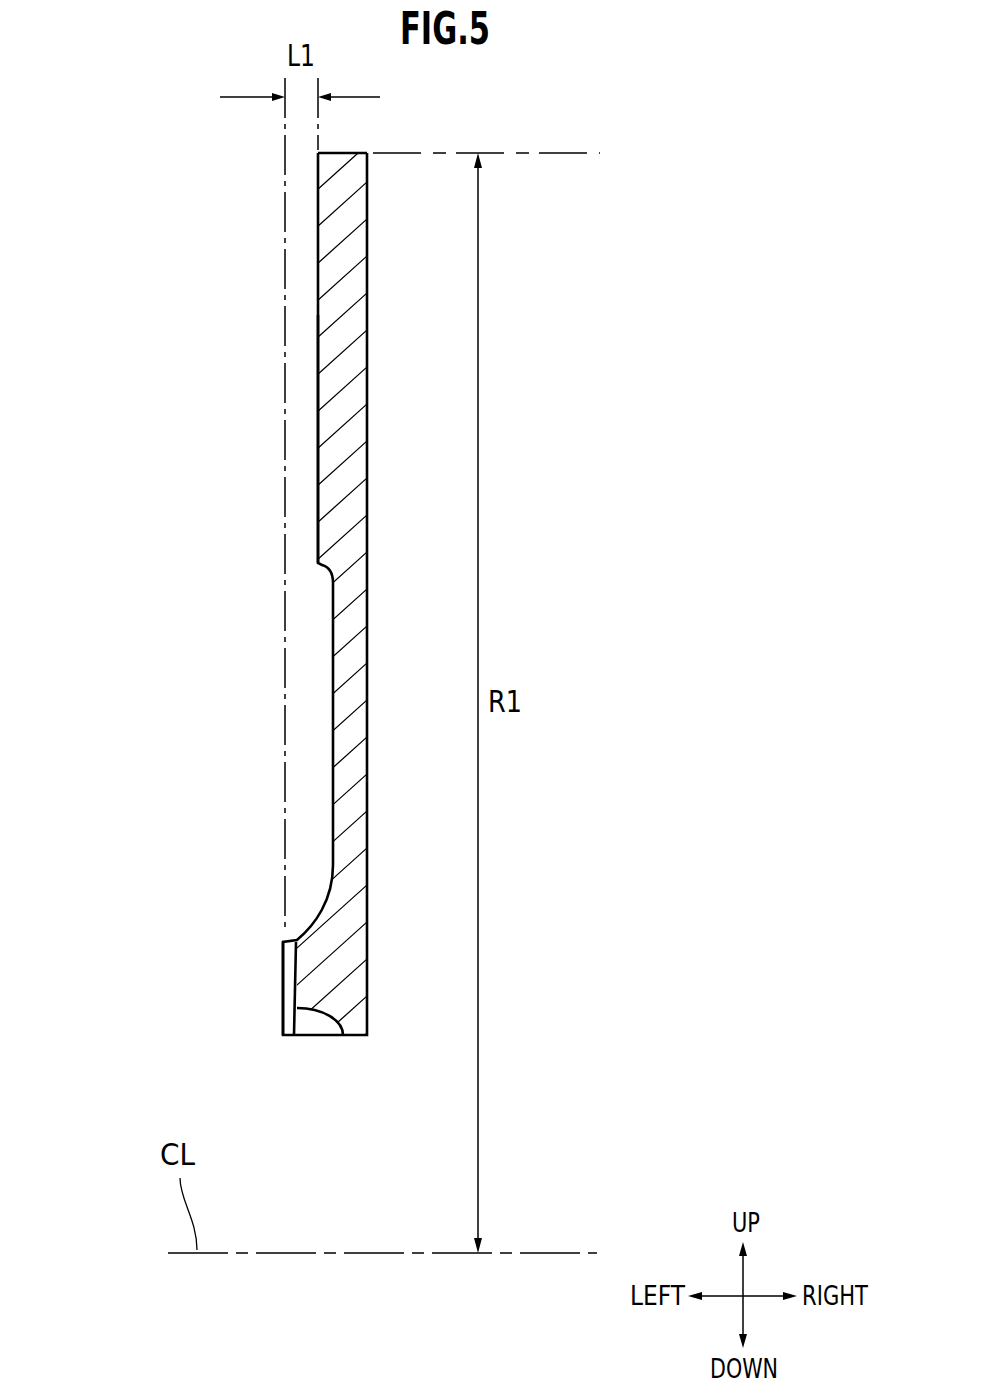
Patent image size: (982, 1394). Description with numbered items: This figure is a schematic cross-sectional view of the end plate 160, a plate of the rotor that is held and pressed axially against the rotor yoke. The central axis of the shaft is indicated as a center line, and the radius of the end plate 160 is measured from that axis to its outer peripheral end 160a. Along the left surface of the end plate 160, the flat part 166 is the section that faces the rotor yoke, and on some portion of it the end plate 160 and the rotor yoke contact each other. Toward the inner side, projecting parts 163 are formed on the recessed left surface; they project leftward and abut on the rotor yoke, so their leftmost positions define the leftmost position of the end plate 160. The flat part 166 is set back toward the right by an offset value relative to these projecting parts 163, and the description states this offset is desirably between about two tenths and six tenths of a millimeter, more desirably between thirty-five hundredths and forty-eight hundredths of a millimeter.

The end plate 160 is at (158, 587).
The outer peripheral end 160a is at (347, 152).
The projecting part 163 is at (288, 973).
The flat part 166 is at (378, 315).